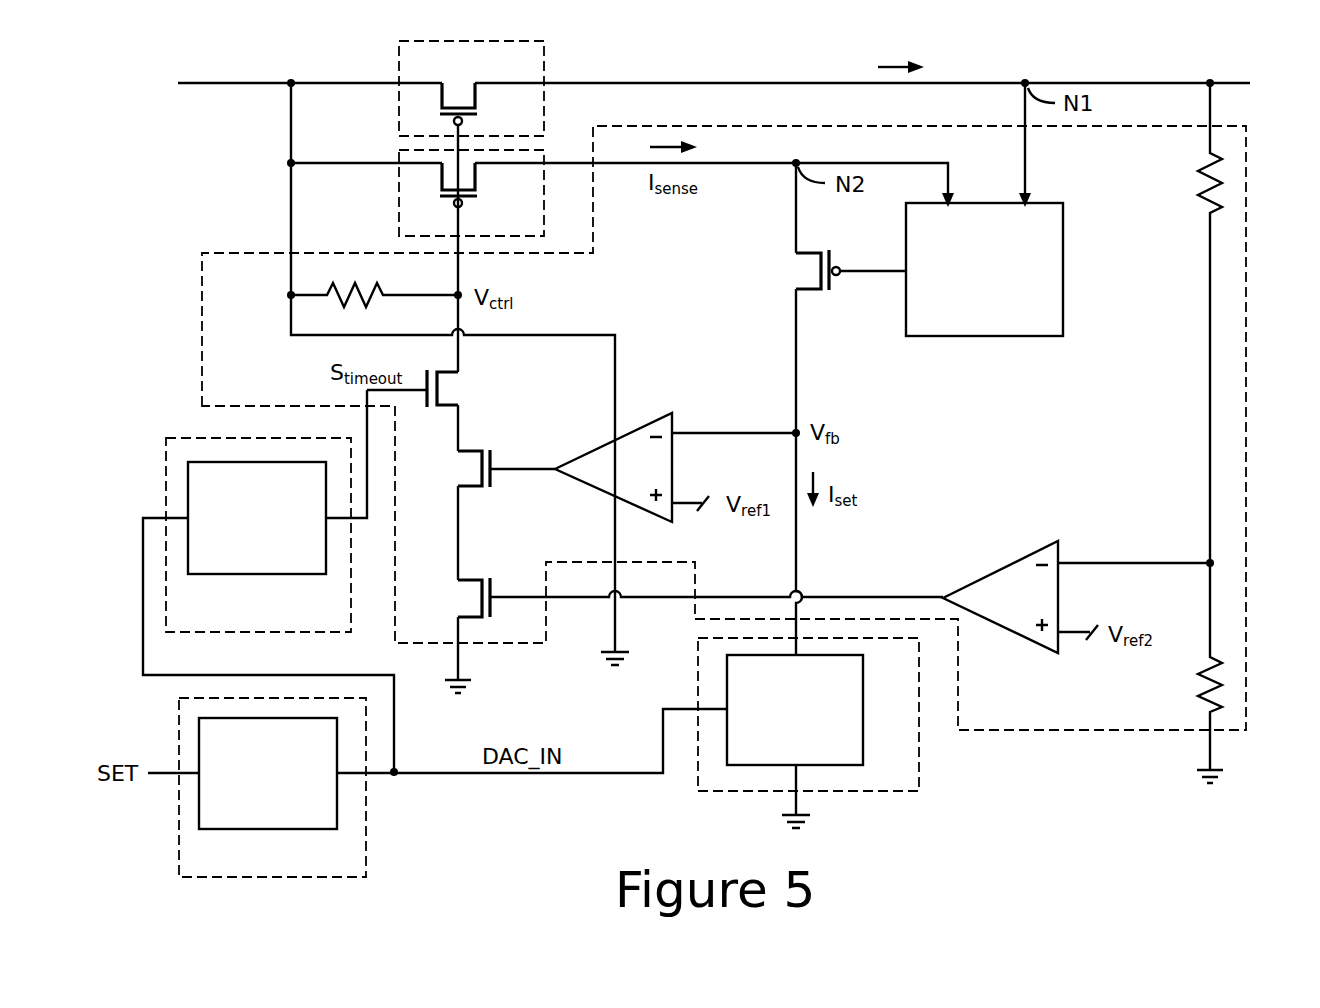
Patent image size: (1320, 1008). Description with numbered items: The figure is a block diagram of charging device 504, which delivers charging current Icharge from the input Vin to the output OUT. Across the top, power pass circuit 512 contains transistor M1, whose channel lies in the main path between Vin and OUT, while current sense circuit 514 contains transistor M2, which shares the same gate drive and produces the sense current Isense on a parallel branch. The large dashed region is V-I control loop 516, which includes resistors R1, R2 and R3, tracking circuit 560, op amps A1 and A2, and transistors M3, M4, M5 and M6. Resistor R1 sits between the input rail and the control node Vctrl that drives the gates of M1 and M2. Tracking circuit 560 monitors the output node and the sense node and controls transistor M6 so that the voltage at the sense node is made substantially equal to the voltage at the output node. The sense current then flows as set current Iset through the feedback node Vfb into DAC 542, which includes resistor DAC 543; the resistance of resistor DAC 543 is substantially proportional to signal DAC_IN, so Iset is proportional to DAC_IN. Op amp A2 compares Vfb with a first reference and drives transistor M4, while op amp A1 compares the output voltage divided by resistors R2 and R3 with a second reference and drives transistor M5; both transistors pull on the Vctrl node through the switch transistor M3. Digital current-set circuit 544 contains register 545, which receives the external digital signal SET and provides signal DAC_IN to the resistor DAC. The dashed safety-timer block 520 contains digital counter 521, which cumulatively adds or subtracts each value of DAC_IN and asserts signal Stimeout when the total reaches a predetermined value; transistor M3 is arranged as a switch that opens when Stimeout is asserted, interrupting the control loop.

The charging device 504 is at (726, 64).
The power pass circuit 512 is at (471, 88).
The current sense circuit 514 is at (471, 193).
The V-I control loop 516 is at (724, 428).
The timer block 520 is at (258, 535).
The digital counter 521 is at (257, 518).
The DAC 542 is at (808, 714).
The resistor DAC 543 is at (795, 710).
The digital current-set circuit 544 is at (272, 787).
The register 545 is at (268, 773).
The tracking circuit 560 is at (984, 269).
The transistor M1 is at (479, 104).
The transistor M2 is at (479, 185).
The transistor M3 is at (434, 351).
The transistor M4 is at (506, 446).
The transistor M5 is at (700, 583).
The transistor M6 is at (851, 226).
The resistor R1 is at (374, 284).
The resistor R2 is at (1191, 323).
The resistor R3 is at (1190, 666).
The op amp A1 is at (1076, 597).
The op amp A2 is at (677, 467).